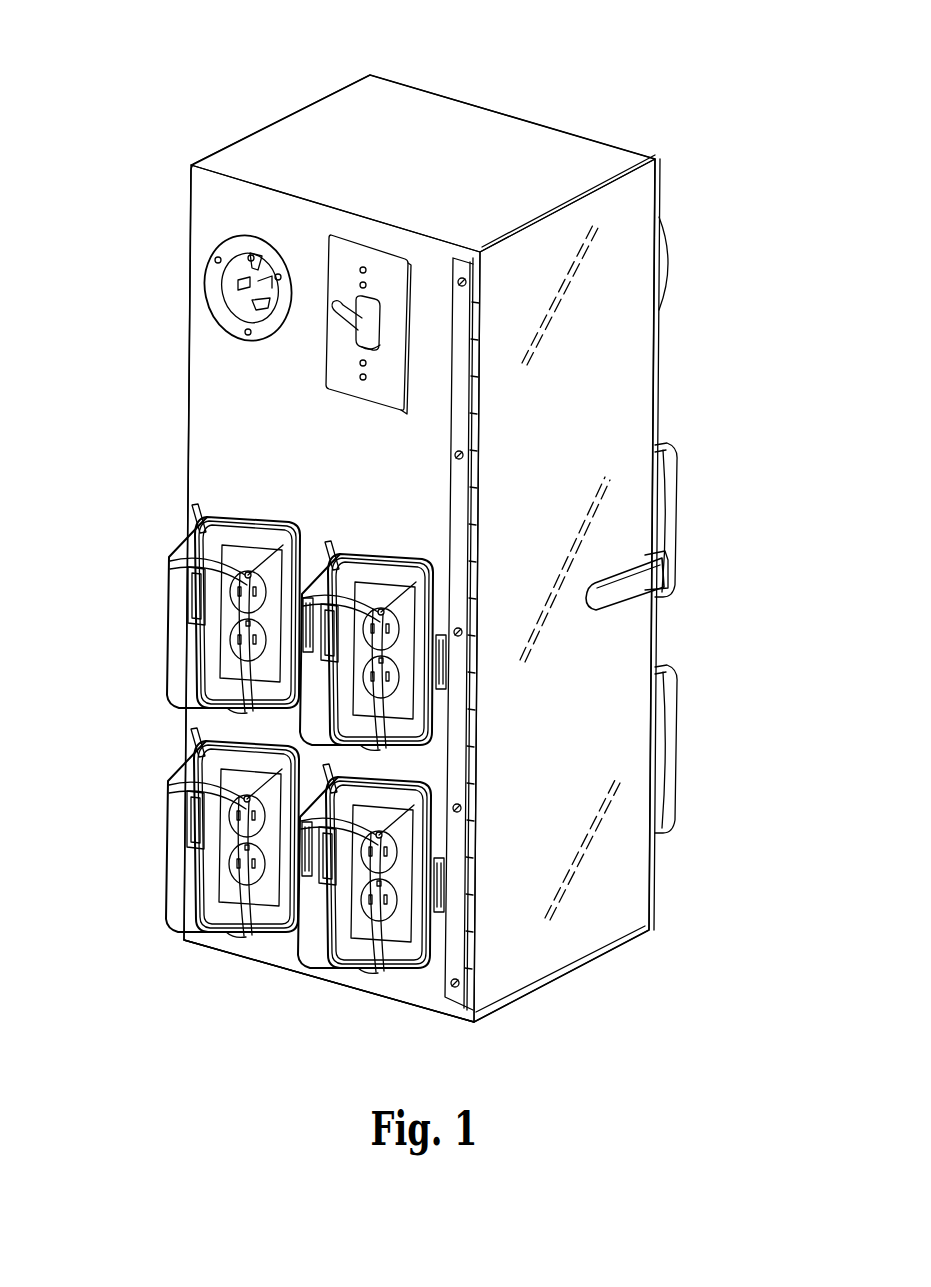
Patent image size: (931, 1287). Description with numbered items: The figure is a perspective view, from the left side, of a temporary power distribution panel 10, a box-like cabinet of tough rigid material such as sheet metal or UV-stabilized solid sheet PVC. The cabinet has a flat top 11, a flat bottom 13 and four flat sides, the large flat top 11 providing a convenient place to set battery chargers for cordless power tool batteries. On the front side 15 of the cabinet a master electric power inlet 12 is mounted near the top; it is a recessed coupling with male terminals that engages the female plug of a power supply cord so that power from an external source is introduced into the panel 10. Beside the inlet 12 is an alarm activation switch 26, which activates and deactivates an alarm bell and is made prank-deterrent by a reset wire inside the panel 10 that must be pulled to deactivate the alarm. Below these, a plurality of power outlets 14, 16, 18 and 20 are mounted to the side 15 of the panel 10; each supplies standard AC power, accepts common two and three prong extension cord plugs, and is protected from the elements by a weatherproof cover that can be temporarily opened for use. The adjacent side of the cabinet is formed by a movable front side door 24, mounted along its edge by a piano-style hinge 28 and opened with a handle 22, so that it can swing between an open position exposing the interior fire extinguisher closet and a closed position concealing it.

The temporary power distribution panel 10 is at (752, 72).
The top panel 11 is at (292, 165).
The master electric power inlet 12 is at (205, 263).
The bottom edge 13 is at (237, 955).
The power outlet 14 is at (166, 584).
The front panel 15 is at (257, 420).
The power outlet 16 is at (355, 573).
The power outlet 18 is at (162, 806).
The power outlet 20 is at (323, 951).
The handle 22 is at (650, 571).
The movable door 24 is at (627, 362).
The alarm activation switch 26 is at (378, 281).
The hinge 28 is at (477, 763).